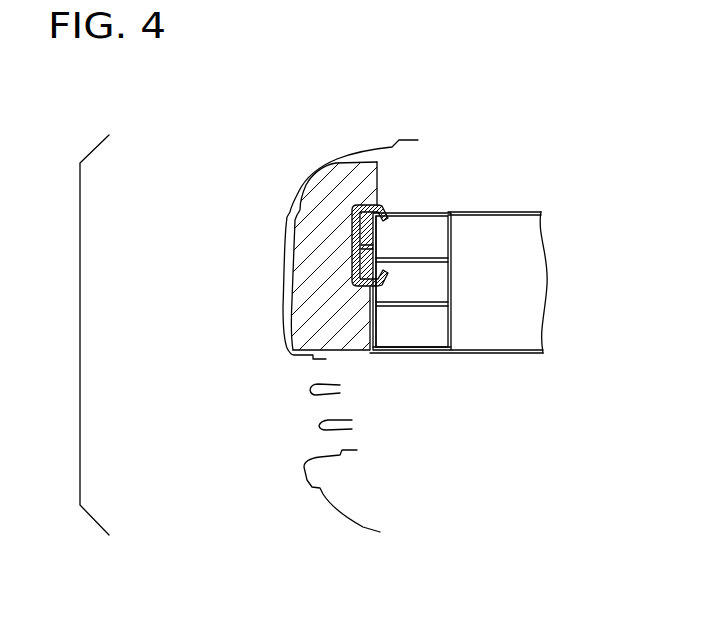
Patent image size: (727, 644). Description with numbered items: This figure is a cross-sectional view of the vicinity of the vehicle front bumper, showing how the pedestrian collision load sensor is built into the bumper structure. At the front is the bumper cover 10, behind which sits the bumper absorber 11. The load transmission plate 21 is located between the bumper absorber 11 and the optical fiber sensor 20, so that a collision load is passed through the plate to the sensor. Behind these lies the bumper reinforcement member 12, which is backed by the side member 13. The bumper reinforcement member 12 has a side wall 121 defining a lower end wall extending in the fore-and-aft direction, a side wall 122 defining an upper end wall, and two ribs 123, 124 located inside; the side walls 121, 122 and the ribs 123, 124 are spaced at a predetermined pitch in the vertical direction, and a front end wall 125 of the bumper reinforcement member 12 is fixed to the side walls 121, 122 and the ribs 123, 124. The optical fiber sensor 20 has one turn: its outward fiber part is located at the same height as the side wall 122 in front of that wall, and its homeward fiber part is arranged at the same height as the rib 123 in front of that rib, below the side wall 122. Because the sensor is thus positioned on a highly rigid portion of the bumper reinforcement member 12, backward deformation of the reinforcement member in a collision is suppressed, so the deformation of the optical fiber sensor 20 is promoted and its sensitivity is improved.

The bumper cover 10 is at (294, 192).
The bumper absorber 11 is at (313, 308).
The bumper reinforcement member 12 is at (452, 292).
The side wall 121 is at (415, 348).
The side wall 122 is at (438, 213).
The rib 123 is at (428, 257).
The rib 124 is at (433, 340).
The front end wall 125 is at (378, 323).
The side member 13 is at (500, 337).
The optical fiber sensor 20 is at (378, 273).
The load transmission plate 21 is at (376, 250).